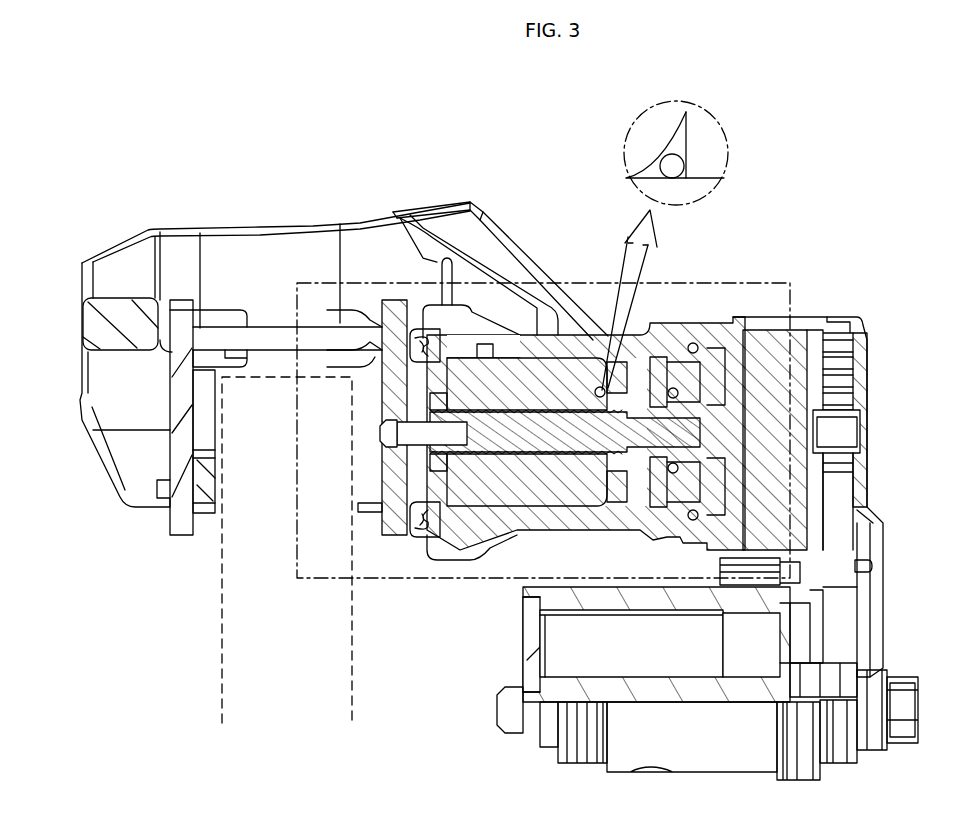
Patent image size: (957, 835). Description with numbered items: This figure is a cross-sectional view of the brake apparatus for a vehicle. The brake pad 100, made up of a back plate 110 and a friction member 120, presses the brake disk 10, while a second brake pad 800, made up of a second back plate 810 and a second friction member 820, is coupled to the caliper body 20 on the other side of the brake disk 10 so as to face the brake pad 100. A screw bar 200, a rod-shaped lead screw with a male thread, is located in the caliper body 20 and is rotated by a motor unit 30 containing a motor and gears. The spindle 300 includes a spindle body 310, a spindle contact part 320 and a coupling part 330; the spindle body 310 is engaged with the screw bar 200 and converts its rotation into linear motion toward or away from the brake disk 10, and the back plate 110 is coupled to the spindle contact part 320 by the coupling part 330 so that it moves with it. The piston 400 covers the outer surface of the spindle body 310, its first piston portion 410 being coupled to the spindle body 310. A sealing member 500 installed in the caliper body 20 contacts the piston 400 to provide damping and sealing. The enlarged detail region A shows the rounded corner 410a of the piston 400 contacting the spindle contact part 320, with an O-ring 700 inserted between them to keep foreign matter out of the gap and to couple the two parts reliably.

The brake disk 10 is at (222, 681).
The caliper body 20 is at (357, 247).
The motor unit 30 is at (797, 387).
The brake pad 100 is at (437, 602).
The back plate 110 is at (395, 512).
The friction member 120 is at (372, 503).
The screw bar 200 is at (523, 587).
The spindle 300 is at (480, 318).
The spindle body 310 is at (455, 300).
The spindle contact part 320 is at (432, 298).
The coupling part 330 is at (390, 300).
The piston 400 is at (522, 336).
The first piston portion 410 is at (648, 143).
The inclined surface 410a is at (692, 133).
The sealing member 500 is at (560, 437).
The O-ring 700 is at (678, 163).
The second brake pad 800 is at (147, 473).
The second back plate 810 is at (182, 520).
The second friction member 820 is at (207, 497).
The detail region A is at (781, 282).